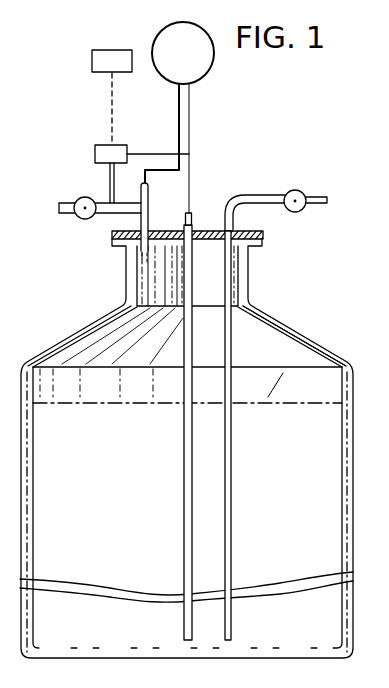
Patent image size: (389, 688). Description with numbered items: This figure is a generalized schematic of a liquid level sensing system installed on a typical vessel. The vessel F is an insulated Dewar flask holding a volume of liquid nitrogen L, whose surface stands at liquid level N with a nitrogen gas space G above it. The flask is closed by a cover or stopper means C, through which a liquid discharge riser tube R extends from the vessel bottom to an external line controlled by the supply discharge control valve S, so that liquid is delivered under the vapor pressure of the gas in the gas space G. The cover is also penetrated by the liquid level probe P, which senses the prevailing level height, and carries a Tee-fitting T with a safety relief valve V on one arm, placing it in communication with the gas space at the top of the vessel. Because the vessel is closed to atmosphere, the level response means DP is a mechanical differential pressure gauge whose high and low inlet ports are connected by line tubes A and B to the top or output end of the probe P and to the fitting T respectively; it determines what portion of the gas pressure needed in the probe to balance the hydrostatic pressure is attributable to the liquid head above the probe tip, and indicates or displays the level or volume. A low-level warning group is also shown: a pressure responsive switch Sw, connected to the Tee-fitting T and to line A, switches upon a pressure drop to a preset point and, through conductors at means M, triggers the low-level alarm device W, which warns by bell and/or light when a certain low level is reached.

The vessel F is at (70, 327).
The liquid level N is at (291, 352).
The gas space G is at (164, 321).
The liquid nitrogen L is at (328, 478).
The liquid level probe P is at (181, 434).
The liquid discharge riser tube R is at (233, 329).
The cover or stopper means C is at (205, 229).
The supply discharge control valve S is at (292, 191).
The Tee-fitting T is at (150, 212).
The safety relief valve V is at (78, 198).
The pressure responsive switch Sw is at (95, 153).
The connecting means M is at (110, 100).
The low-level alarm device W is at (110, 50).
The line tube B is at (178, 120).
The line tube A is at (190, 134).
The level response means DP is at (183, 53).